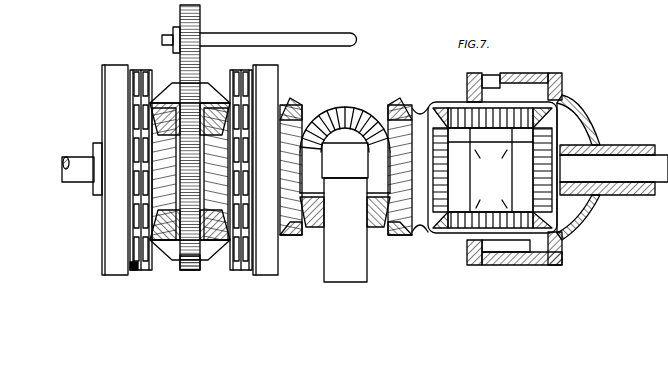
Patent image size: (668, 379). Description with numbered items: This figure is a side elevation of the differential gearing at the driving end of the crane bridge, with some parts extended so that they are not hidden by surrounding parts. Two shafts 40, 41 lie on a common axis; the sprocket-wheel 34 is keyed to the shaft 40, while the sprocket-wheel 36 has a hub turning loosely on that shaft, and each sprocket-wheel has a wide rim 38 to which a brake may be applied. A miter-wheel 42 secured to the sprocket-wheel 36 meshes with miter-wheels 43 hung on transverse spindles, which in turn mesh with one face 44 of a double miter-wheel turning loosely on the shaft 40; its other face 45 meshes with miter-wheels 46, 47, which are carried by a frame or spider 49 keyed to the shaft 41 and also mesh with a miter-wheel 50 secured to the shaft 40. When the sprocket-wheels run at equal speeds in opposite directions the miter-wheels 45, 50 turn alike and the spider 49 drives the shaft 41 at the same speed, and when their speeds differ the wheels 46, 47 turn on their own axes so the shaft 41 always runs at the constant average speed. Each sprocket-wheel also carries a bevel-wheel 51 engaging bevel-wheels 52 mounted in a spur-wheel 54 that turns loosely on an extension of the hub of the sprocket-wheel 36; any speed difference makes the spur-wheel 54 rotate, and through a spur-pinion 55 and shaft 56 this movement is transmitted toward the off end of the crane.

The sprocket-wheel 34 is at (141, 72).
The sprocket-wheel 36 is at (241, 72).
The wide rim 38 is at (190, 170).
The shaft 40 is at (73, 150).
The shaft 41 is at (614, 170).
The miter-wheel 42 is at (292, 112).
The miter-wheels 43 is at (349, 110).
The face of double miter-wheel 44 is at (397, 114).
The miter-wheel 45 is at (490, 170).
The miter-wheel 46 is at (450, 106).
The miter-wheel 47 is at (458, 234).
The frame or spider 49 is at (533, 169).
The miter-wheel 50 is at (516, 170).
The bevel-wheel 51 is at (172, 140).
The bevel-wheels 52 is at (172, 106).
The spur-wheel 54 is at (188, 271).
The spur-pinion 55 is at (200, 26).
The shaft 56 is at (327, 42).